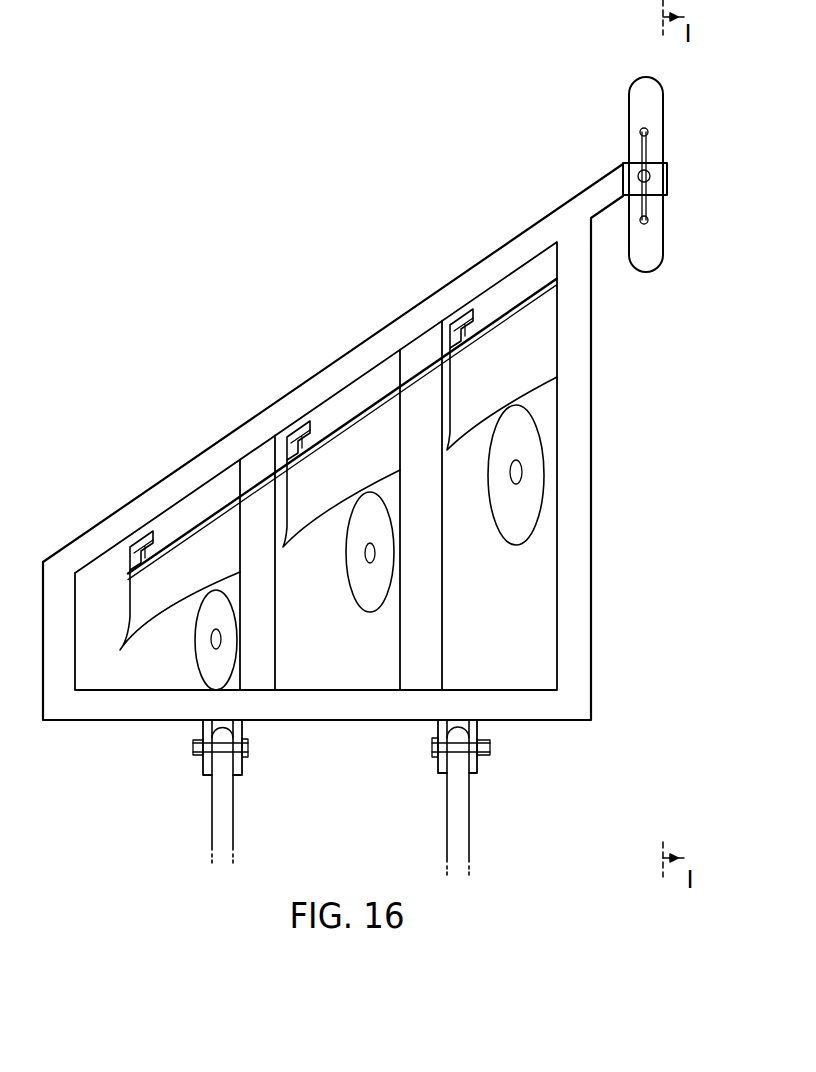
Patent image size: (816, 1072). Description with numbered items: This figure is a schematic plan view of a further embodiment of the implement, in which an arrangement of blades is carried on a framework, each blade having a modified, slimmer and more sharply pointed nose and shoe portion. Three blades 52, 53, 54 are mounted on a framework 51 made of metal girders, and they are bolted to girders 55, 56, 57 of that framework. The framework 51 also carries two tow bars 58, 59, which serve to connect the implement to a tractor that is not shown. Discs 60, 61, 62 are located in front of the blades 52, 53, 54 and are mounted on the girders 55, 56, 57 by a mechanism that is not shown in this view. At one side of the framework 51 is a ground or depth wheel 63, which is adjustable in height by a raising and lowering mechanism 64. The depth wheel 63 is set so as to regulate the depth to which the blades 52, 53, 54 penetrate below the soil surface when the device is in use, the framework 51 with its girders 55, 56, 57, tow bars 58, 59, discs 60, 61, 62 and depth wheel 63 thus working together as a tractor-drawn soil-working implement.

The framework 51 is at (67, 675).
The blade 52 is at (535, 322).
The blade 53 is at (370, 432).
The blade 54 is at (197, 548).
The girder 55 is at (583, 660).
The girder 56 is at (428, 663).
The girder 57 is at (255, 667).
The tow bar 58 is at (460, 842).
The tow bar 59 is at (225, 837).
The disc 60 is at (510, 519).
The disc 61 is at (358, 568).
The disc 62 is at (210, 657).
The ground or depth wheel 63 is at (648, 110).
The raising and lowering mechanism 64 is at (660, 180).